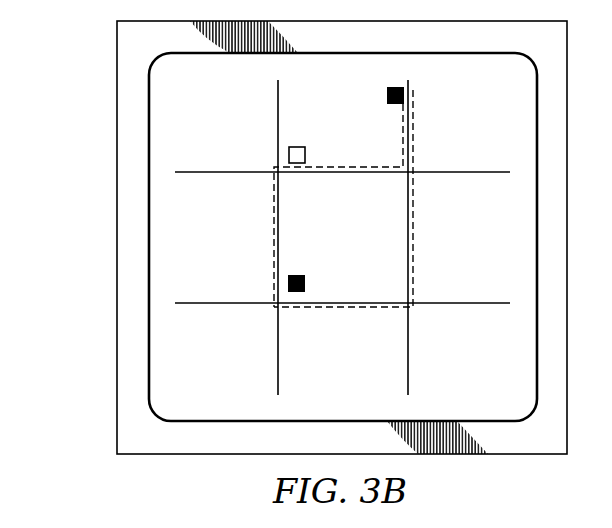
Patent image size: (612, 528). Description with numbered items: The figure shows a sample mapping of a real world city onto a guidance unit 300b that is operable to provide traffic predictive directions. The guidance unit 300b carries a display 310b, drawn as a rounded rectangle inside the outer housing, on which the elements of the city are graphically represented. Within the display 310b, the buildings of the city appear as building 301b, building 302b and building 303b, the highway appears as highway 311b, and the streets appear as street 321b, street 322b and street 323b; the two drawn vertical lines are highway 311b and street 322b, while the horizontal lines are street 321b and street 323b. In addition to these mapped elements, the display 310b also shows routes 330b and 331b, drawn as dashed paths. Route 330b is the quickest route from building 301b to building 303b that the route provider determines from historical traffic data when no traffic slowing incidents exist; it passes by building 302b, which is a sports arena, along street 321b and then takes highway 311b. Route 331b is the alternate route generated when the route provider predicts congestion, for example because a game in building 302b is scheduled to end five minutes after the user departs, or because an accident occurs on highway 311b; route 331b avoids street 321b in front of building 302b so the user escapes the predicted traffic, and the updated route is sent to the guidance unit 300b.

The guidance unit 300b is at (110, 151).
The display 310b is at (172, 363).
The highway 311b is at (278, 112).
The street 322b is at (408, 345).
The street 321b is at (462, 172).
The street 323b is at (220, 302).
The route 330b is at (273, 220).
The route 331b is at (413, 240).
The building 301b is at (387, 95).
The building 302b is at (305, 153).
The building 303b is at (305, 284).